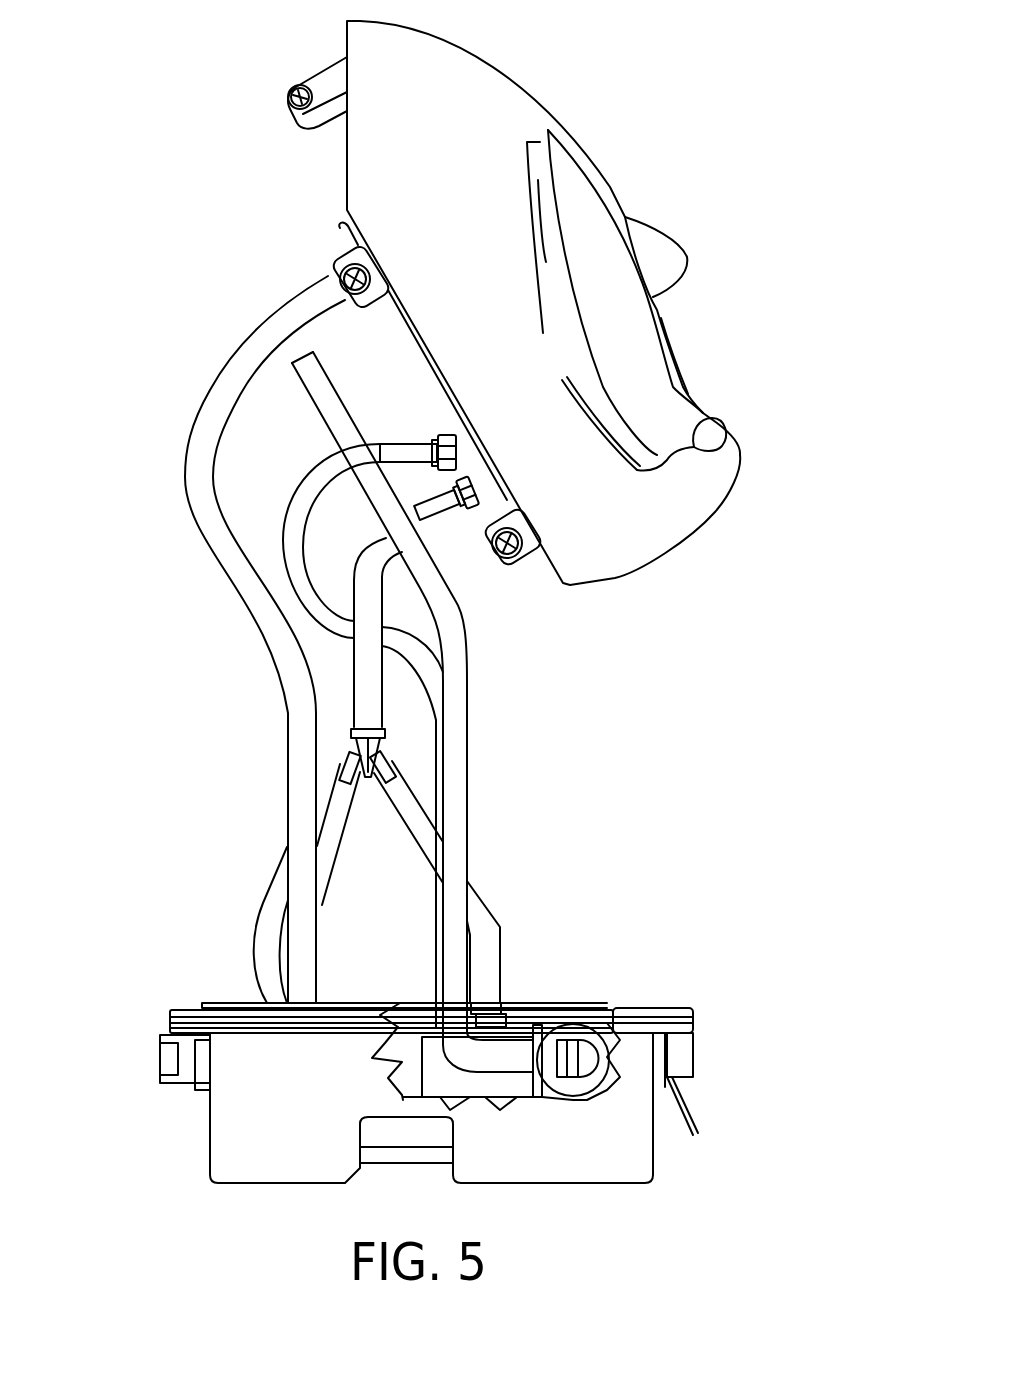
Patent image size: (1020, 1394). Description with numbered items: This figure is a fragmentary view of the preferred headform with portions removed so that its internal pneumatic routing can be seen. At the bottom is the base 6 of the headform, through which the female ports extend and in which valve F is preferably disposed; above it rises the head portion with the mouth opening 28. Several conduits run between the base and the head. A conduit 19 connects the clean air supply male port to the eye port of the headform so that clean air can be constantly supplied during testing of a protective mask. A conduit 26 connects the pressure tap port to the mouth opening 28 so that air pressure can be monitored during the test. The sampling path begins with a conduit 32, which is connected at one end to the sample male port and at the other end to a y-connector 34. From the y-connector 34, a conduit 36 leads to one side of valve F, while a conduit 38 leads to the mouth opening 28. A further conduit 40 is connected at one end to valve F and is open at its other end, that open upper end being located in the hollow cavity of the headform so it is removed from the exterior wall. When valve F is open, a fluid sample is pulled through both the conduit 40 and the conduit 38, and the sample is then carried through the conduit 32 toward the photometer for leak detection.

The base 6 is at (210, 1140).
The conduit 19 is at (296, 765).
The conduit 26 is at (288, 572).
The mouth opening 28 is at (694, 363).
The conduit 32 is at (487, 930).
The y-connector 34 is at (385, 751).
The conduit 36 is at (268, 900).
The conduit 38 is at (375, 683).
The conduit 40 is at (460, 805).